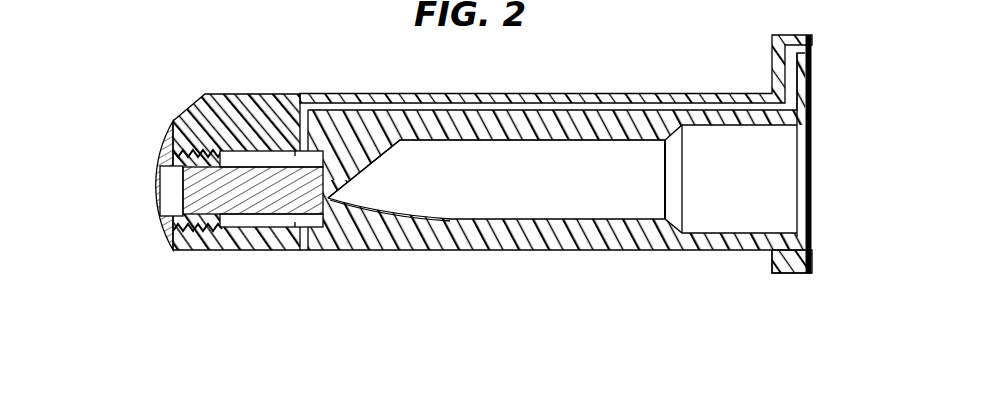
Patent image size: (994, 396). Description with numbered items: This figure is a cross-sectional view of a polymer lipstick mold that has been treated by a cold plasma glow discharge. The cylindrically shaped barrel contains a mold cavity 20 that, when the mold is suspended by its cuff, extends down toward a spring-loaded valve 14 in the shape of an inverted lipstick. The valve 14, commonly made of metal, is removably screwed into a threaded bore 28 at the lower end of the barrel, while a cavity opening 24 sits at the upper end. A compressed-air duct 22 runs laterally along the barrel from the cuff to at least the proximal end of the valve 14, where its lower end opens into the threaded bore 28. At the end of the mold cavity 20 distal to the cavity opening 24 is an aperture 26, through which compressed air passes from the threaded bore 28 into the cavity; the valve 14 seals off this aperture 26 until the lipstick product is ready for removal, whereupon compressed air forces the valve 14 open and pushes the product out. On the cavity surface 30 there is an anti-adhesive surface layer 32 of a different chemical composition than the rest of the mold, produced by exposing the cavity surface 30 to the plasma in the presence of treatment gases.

The spring-loaded valve 14 is at (195, 188).
The mold cavity 20 is at (615, 188).
The compressed-air duct 22 is at (802, 57).
The cavity opening 24 is at (790, 200).
The aperture 26 is at (340, 198).
The threaded bore 28 is at (256, 228).
The cavity surface 30 is at (528, 225).
The anti-adhesive surface layer 32 is at (452, 141).